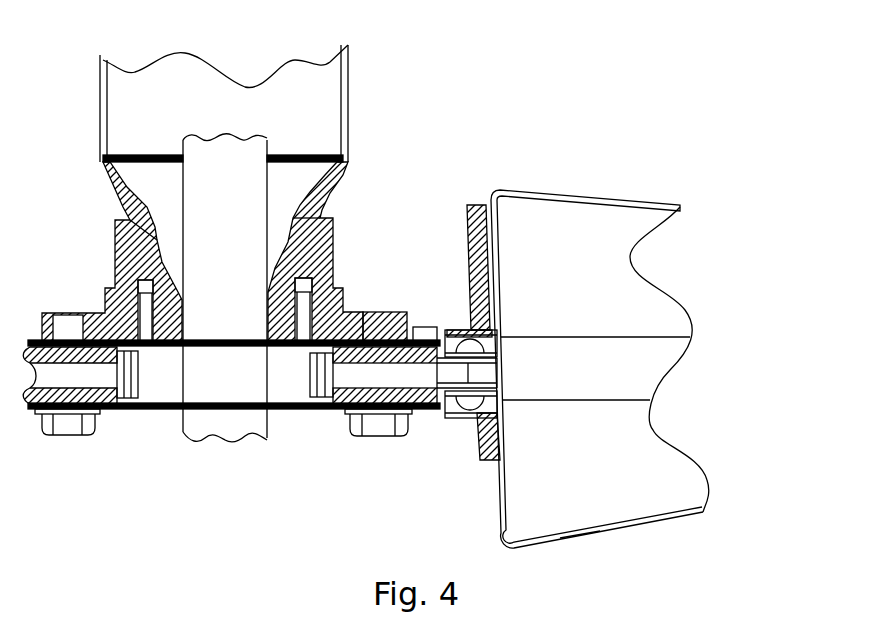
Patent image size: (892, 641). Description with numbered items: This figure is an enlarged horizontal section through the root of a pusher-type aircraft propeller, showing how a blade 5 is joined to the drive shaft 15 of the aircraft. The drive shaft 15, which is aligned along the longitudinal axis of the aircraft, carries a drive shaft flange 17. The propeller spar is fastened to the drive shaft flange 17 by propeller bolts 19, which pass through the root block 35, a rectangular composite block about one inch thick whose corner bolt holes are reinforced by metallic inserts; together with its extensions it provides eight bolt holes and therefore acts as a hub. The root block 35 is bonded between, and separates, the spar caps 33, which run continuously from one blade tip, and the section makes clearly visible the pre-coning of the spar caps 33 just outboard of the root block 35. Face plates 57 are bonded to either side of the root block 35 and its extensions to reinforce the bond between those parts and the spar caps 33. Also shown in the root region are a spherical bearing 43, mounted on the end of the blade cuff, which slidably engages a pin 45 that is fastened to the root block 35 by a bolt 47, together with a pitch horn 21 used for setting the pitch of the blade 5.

The blade 5 is at (583, 537).
The drive shaft 15 is at (348, 118).
The drive shaft flange 17 is at (333, 250).
The propeller bolts 19 is at (373, 430).
The pitch horn 21 is at (480, 430).
The spar caps 33 is at (640, 347).
The root block 35 is at (373, 312).
The spherical bearing 43 is at (497, 318).
The pin 45 is at (453, 430).
The bolt 47 is at (310, 377).
The face plates 57 is at (153, 430).